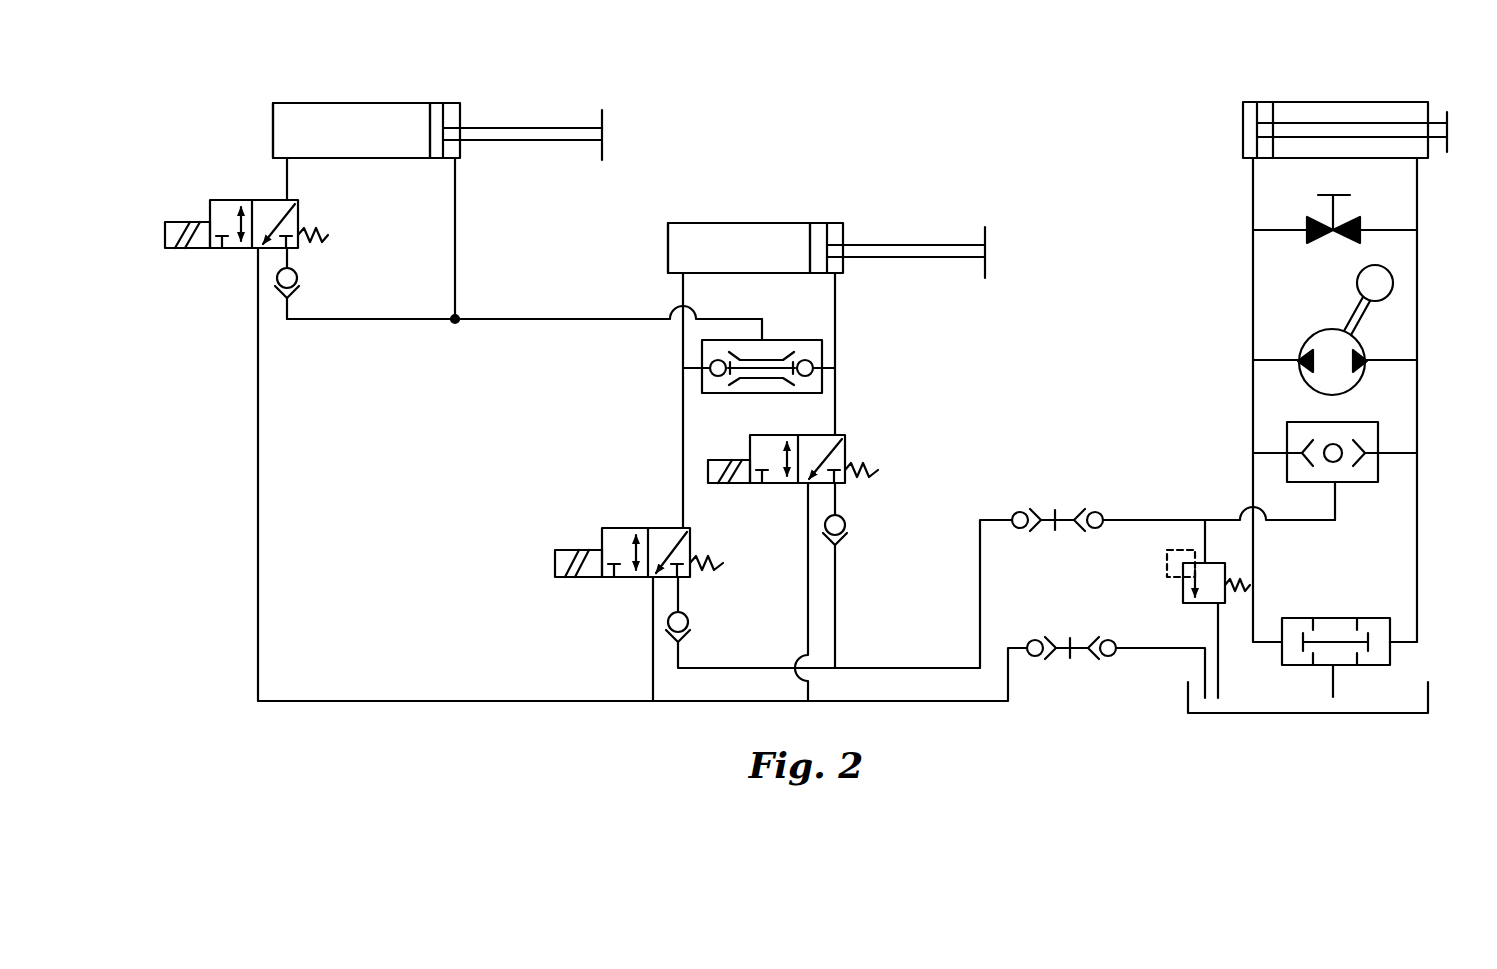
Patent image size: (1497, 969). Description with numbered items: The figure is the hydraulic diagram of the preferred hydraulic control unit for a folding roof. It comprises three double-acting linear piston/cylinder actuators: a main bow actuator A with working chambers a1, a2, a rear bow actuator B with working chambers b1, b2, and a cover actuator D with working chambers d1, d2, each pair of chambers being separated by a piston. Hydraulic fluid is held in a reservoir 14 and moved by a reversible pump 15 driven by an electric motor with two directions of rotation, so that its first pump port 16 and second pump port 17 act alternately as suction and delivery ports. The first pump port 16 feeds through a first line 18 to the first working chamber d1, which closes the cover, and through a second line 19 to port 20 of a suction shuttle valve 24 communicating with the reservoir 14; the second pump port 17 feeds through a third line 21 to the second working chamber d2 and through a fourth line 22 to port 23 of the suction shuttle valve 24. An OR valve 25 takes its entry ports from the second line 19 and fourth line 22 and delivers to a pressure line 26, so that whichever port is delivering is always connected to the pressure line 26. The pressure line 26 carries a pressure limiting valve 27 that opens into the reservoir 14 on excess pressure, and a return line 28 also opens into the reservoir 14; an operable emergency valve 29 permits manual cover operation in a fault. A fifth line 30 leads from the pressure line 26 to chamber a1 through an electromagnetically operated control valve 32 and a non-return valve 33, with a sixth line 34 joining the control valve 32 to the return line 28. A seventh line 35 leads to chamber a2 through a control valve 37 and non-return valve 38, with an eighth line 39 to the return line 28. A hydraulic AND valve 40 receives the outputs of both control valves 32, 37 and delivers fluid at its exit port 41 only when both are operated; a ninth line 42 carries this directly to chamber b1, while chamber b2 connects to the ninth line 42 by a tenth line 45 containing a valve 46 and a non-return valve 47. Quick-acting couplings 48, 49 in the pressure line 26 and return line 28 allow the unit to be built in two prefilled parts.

The reservoir 14 is at (1433, 700).
The pump 15 is at (1362, 337).
The first pump port 16 is at (1368, 358).
The second pump port 17 is at (1298, 358).
The first line 18 is at (1418, 250).
The second line 19 is at (1417, 473).
The port of suction shuttle valve 20 is at (1390, 655).
The third line 21 is at (1253, 262).
The fourth line 22 is at (1253, 420).
The port of suction shuttle valve 23 is at (1267, 640).
The suction shuttle valve 24 is at (1372, 618).
The OR valve 25 is at (1357, 483).
The pressure line 26 is at (1147, 518).
The pressure limiting valve 27 is at (1233, 570).
The return line 28 is at (1155, 648).
The emergency valve 29 is at (1353, 210).
The fifth line 30 is at (837, 608).
The control valve 32 is at (848, 442).
The non-return valve 33 is at (849, 521).
The sixth line 34 is at (807, 562).
The seventh line 35 is at (680, 425).
The control valve 37 is at (612, 528).
The non-return valve 38 is at (693, 615).
The eighth line 39 is at (652, 608).
The AND valve 40 is at (808, 340).
The exit port 41 is at (760, 338).
The ninth line 42 is at (533, 320).
The tenth line 45 is at (290, 176).
The valve 46 is at (228, 200).
The non-return valve 47 is at (302, 278).
The quick-acting coupling 48 is at (1003, 518).
The quick-acting coupling 49 is at (1060, 632).
The main bow actuator A is at (782, 213).
The first working chamber of main bow actuator a1 is at (846, 236).
The second working chamber of main bow actuator a2 is at (718, 233).
The rear bow actuator B is at (388, 95).
The first working chamber of rear bow actuator b1 is at (462, 116).
The second working chamber of rear bow actuator b2 is at (350, 128).
The cover actuator D is at (1343, 92).
The first working chamber of cover actuator d1 is at (1408, 113).
The second working chamber of cover actuator d2 is at (1253, 117).